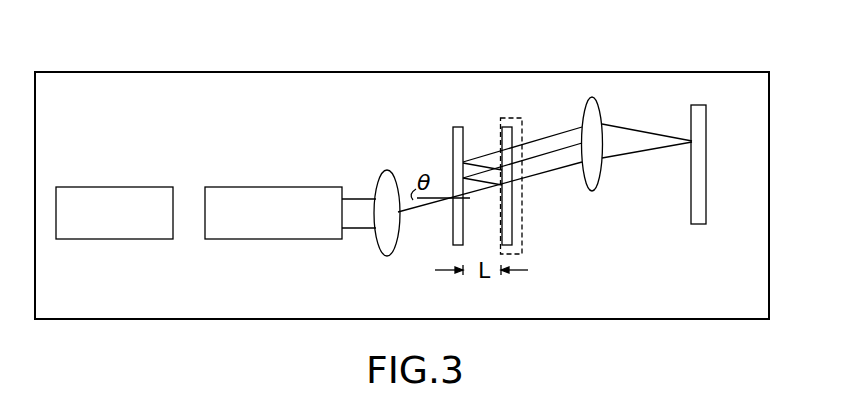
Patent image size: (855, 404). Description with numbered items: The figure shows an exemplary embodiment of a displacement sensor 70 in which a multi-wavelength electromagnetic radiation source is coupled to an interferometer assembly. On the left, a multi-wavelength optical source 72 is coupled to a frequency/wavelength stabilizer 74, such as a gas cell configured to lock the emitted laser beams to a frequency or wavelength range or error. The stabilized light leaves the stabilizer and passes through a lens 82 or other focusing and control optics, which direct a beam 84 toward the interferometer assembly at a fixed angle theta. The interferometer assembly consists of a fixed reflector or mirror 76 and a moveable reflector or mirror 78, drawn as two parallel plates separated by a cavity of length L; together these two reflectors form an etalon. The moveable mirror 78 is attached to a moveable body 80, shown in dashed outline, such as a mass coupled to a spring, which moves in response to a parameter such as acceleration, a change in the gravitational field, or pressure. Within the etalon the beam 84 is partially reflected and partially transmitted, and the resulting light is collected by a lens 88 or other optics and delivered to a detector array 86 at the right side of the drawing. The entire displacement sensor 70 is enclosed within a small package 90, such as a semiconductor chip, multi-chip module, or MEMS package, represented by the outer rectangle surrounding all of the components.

The displacement sensor 70 is at (379, 57).
The small package 90 is at (152, 88).
The multi-wavelength optical source 72 is at (115, 187).
The frequency/wavelength stabilizer 74 is at (275, 187).
The lens 82 is at (383, 173).
The beam 84 is at (427, 208).
The fixed reflector or mirror 76 is at (453, 137).
The moveable reflector or mirror 78 is at (502, 138).
The moveable body 80 is at (522, 235).
The lens 88 is at (602, 110).
The detector array 86 is at (707, 127).